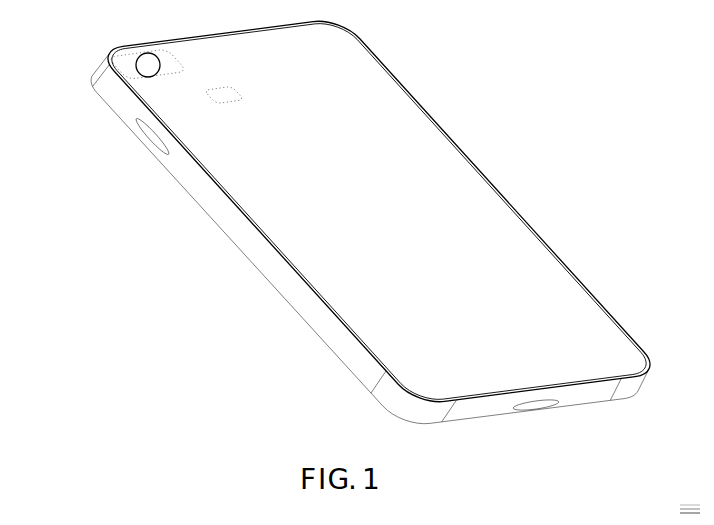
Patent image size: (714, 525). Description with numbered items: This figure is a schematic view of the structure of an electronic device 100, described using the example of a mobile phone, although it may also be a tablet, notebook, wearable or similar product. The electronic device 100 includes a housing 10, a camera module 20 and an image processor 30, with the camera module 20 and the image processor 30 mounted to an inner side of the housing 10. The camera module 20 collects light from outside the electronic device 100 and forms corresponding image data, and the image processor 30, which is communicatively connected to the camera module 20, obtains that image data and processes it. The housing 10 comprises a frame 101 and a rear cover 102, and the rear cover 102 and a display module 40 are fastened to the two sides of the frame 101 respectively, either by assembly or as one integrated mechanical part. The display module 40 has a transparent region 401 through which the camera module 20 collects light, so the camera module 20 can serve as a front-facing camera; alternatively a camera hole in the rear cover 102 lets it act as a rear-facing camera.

The electronic device 100 is at (63, 32).
The housing 10 is at (165, 237).
The frame 101 is at (223, 215).
The rear cover 102 is at (238, 243).
The camera module 20 is at (165, 62).
The image processor 30 is at (240, 97).
The display module 40 is at (470, 180).
The transparent region 401 is at (138, 75).